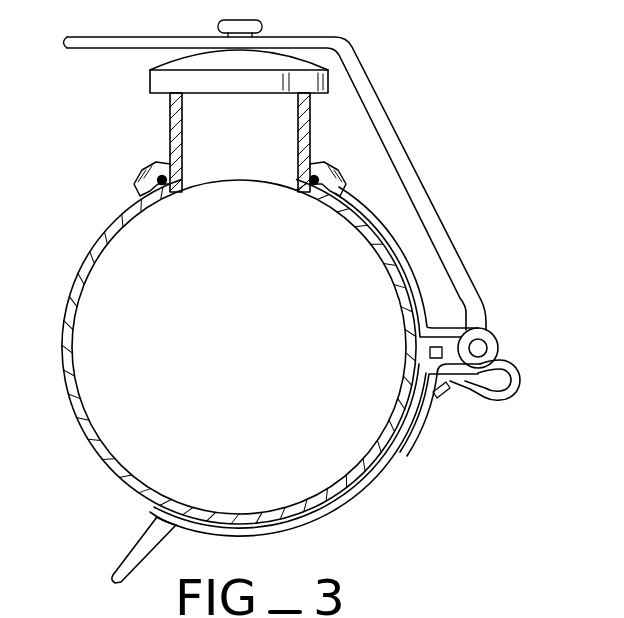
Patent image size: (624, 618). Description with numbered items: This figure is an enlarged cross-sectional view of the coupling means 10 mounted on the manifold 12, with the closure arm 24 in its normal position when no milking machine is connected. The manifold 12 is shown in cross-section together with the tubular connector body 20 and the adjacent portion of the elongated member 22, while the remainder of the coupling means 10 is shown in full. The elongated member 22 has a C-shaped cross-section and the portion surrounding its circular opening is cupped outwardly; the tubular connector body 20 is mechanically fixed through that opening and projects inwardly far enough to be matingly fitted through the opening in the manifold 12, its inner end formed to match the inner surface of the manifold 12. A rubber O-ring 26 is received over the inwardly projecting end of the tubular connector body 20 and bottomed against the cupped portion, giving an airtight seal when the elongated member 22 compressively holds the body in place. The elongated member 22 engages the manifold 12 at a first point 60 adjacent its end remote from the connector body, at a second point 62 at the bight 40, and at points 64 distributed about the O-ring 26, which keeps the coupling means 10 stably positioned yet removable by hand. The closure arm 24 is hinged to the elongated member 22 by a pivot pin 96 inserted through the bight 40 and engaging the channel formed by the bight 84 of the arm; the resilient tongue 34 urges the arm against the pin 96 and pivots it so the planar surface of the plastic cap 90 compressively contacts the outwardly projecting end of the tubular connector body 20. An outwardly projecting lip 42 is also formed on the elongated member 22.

The coupling means 10 is at (281, 183).
The manifold 12 is at (98, 243).
The tubular connector body 20 is at (168, 122).
The elongated member 22 is at (407, 458).
The closure arm 24 is at (398, 124).
The O-ring 26 is at (152, 172).
The tongue 34 is at (425, 418).
The bight 40 is at (465, 330).
The lip 42 is at (127, 553).
The first point 60 is at (180, 517).
The second point 62 is at (410, 307).
The points 64 is at (172, 186).
The bight 84 is at (500, 392).
The cap 90 is at (157, 75).
The pivot pin 96 is at (478, 348).